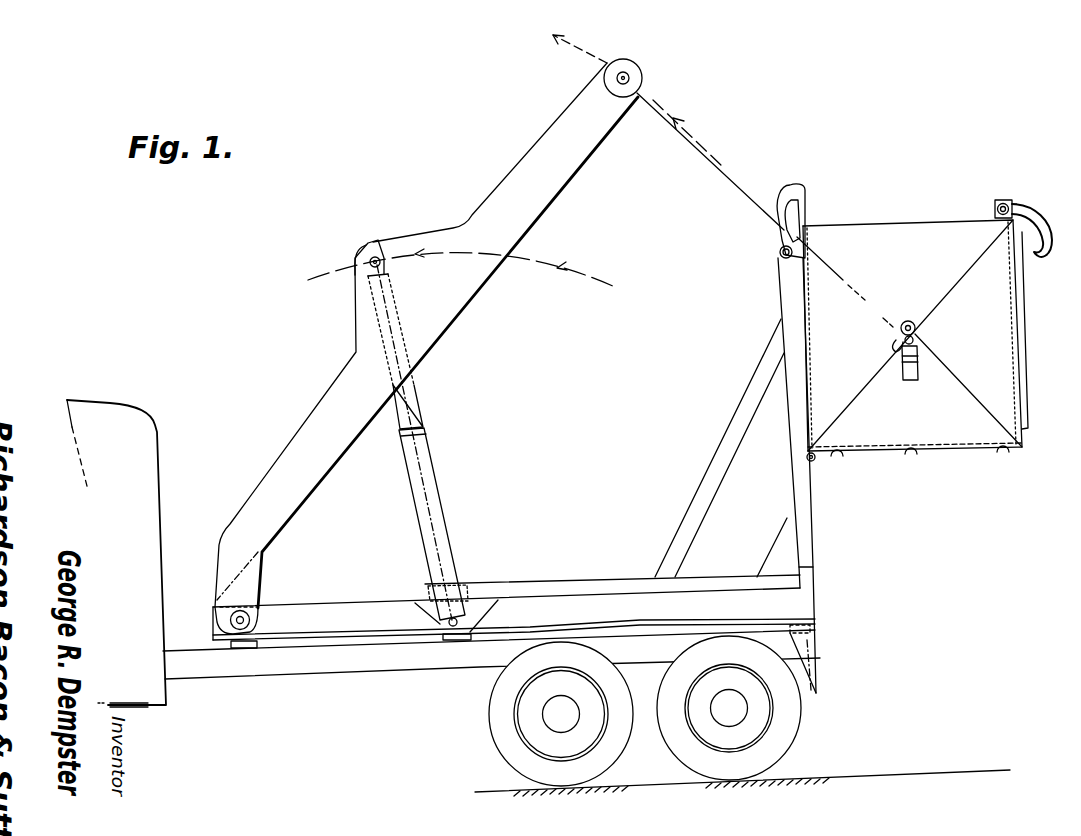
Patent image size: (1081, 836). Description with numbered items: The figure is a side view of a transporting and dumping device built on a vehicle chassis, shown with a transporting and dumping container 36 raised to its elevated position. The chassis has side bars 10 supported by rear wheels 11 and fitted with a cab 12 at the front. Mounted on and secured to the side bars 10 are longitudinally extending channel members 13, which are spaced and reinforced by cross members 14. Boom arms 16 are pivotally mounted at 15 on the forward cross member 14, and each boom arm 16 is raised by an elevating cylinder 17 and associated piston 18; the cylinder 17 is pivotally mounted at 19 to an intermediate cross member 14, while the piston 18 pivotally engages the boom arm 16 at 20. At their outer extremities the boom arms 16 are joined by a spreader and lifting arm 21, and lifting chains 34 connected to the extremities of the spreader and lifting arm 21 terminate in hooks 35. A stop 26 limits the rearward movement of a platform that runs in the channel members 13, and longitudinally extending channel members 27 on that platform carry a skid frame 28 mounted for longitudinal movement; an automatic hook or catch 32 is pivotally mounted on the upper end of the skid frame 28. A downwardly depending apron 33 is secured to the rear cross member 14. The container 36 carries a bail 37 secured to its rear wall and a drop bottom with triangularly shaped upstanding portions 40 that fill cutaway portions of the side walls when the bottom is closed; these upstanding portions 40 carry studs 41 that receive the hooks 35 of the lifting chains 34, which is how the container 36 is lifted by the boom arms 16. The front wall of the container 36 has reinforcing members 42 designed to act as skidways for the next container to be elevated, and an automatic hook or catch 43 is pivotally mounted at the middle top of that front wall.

The side bars 10 is at (381, 665).
The rear wheels 11 is at (490, 733).
The cab 12 is at (166, 690).
The channel members 13 is at (800, 604).
The cross members 14 is at (257, 646).
The pivot 15 is at (250, 620).
The boom arms 16 is at (465, 295).
The elevating cylinder 17 is at (447, 498).
The piston 18 is at (408, 414).
The pivot 19 is at (446, 623).
The pivot 20 is at (378, 265).
The spreader and lifting arm 21 is at (643, 78).
The stop 26 is at (800, 588).
The channel members 27 is at (802, 580).
The skid frame 28 is at (797, 497).
The automatic hook or catch 32 is at (797, 190).
The apron 33 is at (813, 672).
The lifting chains 34 is at (726, 170).
The hooks 35 is at (908, 321).
The transporting and dumping container 36 is at (919, 228).
The bail 37 is at (806, 215).
The upstanding portions 40 is at (952, 378).
The studs 41 is at (918, 335).
The reinforcing members 42 is at (1024, 340).
The automatic hook or catch 43 is at (1014, 217).